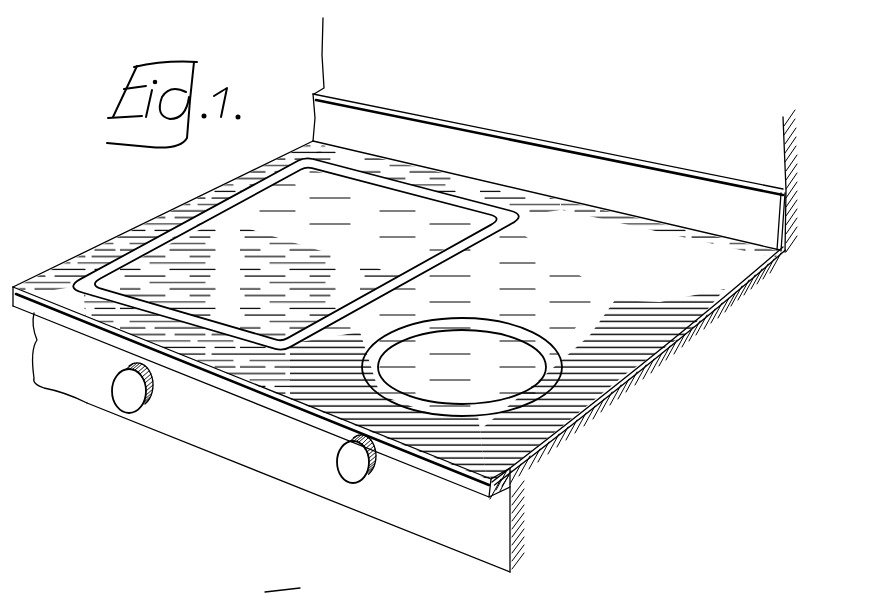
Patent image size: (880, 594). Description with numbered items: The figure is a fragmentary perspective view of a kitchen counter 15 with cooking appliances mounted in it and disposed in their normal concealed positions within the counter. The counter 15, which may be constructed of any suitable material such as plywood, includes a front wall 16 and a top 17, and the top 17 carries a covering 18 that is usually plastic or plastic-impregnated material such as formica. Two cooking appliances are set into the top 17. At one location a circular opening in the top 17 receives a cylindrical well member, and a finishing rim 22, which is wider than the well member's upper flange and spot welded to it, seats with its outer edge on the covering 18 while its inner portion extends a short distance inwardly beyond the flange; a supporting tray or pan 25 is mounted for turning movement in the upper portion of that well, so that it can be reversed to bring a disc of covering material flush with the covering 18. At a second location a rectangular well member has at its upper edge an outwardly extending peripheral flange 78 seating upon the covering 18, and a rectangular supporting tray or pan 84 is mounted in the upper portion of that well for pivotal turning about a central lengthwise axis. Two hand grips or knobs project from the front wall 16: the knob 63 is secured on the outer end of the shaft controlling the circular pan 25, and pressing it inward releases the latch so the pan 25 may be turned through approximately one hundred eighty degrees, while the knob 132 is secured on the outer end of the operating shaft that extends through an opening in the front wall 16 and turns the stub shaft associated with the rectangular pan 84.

The counter 15 is at (688, 353).
The front wall 16 is at (487, 546).
The top 17 is at (623, 383).
The covering 18 is at (730, 293).
The finishing rim 22 is at (510, 333).
The supporting tray or pan 25 is at (447, 348).
The peripheral flange 78 is at (491, 228).
The supporting tray or pan 84 is at (419, 248).
The hand grip or knob 132 is at (132, 397).
The hand grip or knob 63 is at (358, 478).